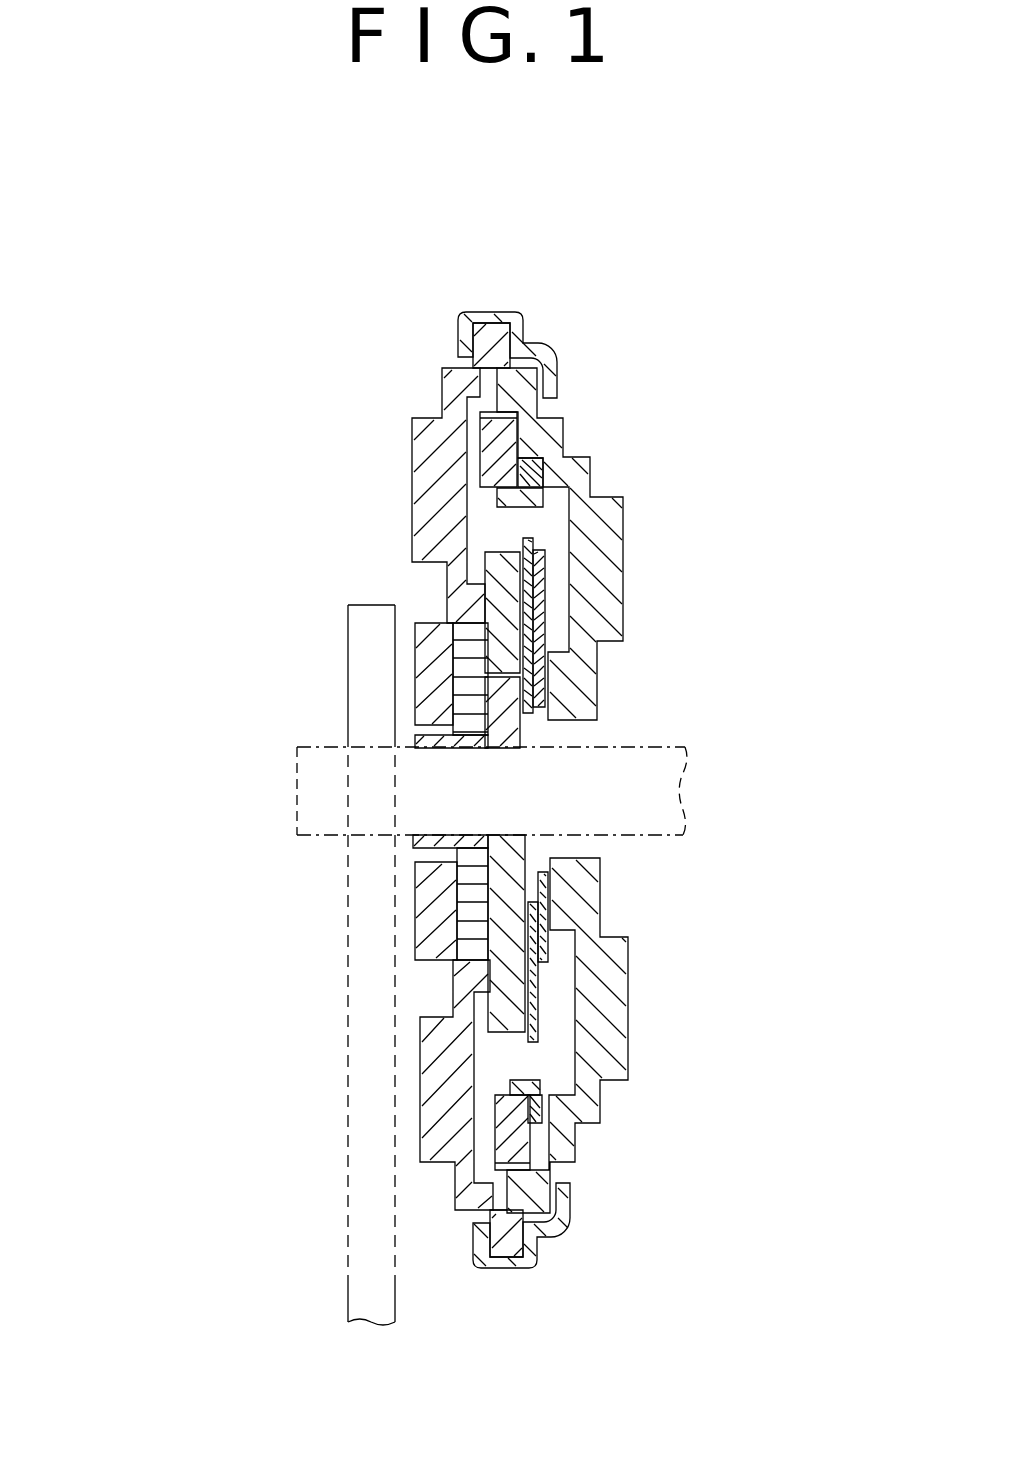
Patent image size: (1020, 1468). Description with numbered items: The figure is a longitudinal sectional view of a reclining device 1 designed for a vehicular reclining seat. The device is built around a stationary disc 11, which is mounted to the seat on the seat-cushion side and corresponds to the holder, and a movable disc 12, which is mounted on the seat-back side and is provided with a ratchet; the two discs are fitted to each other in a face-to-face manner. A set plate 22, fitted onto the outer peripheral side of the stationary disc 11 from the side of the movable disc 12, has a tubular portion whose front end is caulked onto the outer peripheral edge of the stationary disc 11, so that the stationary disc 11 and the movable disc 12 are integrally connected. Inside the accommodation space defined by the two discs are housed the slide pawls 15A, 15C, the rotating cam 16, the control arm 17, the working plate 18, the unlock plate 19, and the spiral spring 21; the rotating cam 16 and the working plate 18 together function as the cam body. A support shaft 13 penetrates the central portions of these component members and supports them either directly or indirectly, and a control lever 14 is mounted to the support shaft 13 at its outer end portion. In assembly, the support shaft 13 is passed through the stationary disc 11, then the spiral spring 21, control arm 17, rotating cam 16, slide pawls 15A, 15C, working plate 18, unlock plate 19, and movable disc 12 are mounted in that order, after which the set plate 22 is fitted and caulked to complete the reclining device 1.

The reclining device 1 is at (236, 498).
The stationary disc 11 is at (408, 446).
The movable disc 12 is at (622, 510).
The support shaft 13 is at (318, 806).
The control lever 14 is at (372, 1160).
The slide pawl 15A is at (517, 438).
The slide pawl 15C is at (541, 1141).
The rotating cam 16 is at (482, 556).
The control arm 17 is at (539, 720).
The working plate 18 is at (543, 1010).
The unlock plate 19 is at (550, 606).
The spiral spring 21 is at (462, 688).
The set plate 22 is at (498, 309).